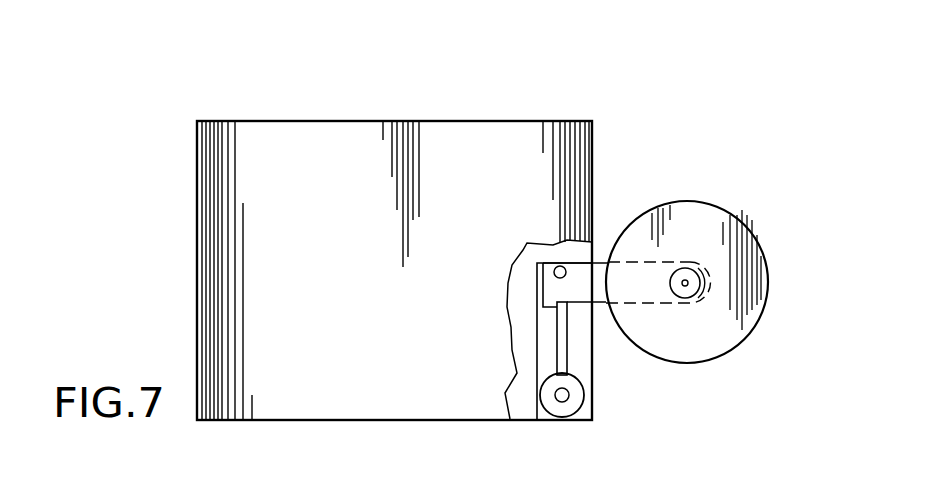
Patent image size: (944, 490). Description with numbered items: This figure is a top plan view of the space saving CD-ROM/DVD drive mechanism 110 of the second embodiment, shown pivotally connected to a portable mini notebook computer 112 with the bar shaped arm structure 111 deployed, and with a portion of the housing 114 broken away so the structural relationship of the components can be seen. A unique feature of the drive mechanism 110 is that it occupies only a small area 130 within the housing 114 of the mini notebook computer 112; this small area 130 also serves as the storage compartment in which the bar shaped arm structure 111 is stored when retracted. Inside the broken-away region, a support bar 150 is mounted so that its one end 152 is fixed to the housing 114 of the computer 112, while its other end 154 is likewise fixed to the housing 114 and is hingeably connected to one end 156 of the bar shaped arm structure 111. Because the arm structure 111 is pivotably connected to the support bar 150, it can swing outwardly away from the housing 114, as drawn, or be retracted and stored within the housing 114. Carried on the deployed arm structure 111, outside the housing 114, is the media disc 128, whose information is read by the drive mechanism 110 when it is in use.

The space saving CD-ROM/DVD drive mechanism 110 is at (594, 330).
The bar shaped arm structure 111 is at (603, 257).
The portable mini notebook computer 112 is at (587, 70).
The housing 114 is at (180, 263).
The media disc 128 is at (723, 210).
The small area 130 is at (536, 372).
The support bar 150 is at (563, 355).
The one end 152 is at (572, 405).
The other end 154 is at (552, 307).
The one end 156 is at (548, 263).